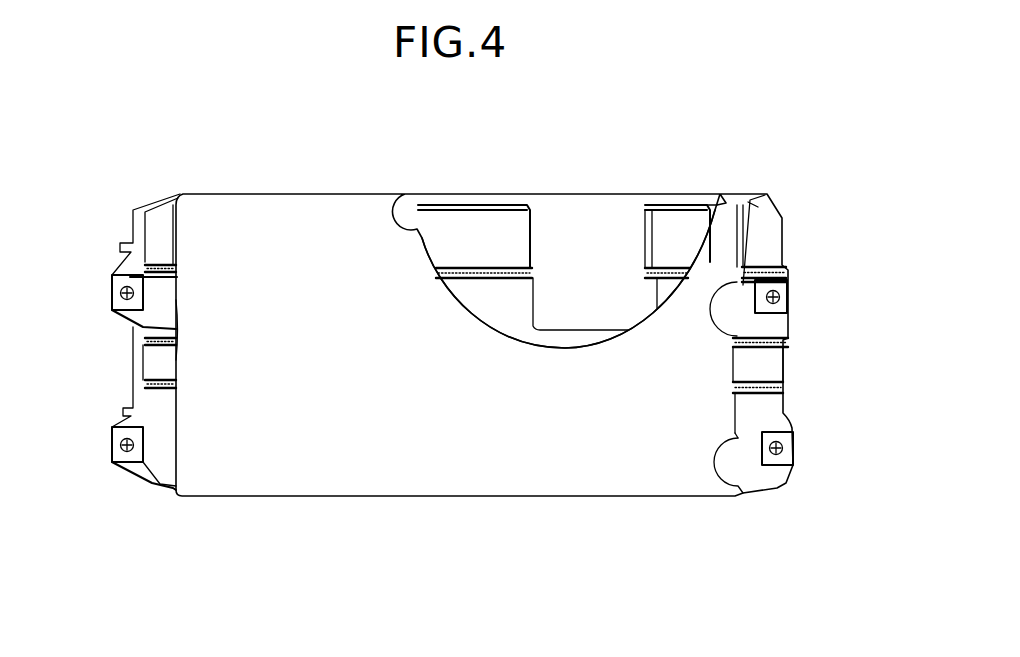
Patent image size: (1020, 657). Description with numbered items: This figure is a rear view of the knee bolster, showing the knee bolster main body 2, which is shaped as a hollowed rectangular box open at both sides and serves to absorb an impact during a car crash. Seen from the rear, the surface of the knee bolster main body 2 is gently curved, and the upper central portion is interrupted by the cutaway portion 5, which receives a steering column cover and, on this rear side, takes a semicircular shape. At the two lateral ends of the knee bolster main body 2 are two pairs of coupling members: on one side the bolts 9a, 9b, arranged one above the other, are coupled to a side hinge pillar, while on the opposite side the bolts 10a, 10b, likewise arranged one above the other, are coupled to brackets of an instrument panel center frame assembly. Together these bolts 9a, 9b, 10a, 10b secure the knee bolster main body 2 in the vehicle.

The knee bolster main body 2 is at (665, 480).
The cutaway portion 5 is at (587, 228).
The bolt 9a is at (122, 290).
The bolt 9b is at (122, 443).
The bolt 10a is at (780, 294).
The bolt 10b is at (783, 444).